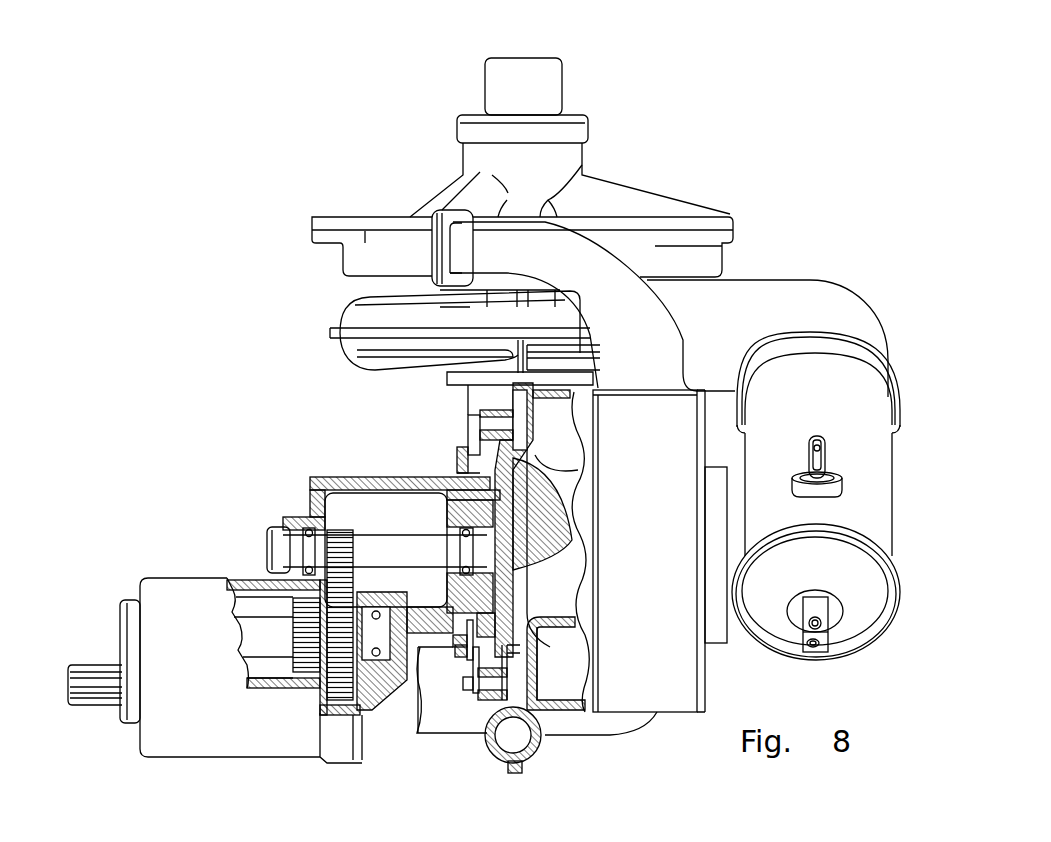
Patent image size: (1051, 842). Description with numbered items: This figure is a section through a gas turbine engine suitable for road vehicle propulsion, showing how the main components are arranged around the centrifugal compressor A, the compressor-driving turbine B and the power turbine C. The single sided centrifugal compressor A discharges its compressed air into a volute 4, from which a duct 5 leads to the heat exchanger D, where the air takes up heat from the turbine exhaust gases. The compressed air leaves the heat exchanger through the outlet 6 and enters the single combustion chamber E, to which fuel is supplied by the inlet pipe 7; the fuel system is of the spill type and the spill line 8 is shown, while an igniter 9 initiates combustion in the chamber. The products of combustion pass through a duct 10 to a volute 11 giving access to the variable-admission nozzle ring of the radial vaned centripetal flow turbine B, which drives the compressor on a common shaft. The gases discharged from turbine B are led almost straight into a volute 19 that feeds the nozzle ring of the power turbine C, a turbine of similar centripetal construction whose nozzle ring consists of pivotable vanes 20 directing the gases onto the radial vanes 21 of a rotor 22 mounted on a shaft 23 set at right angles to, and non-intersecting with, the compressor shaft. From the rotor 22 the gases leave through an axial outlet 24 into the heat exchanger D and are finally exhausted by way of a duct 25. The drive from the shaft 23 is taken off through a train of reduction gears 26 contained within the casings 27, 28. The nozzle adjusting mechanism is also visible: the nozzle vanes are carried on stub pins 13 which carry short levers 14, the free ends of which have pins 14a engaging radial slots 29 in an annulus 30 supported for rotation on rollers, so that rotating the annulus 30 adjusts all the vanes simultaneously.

The volute 4 is at (397, 232).
The centrifugal compressor A is at (650, 197).
The duct 5 is at (645, 338).
The duct 10 is at (808, 293).
The compressor-driving turbine B is at (348, 310).
The volute 11 is at (363, 352).
The combustion chamber E is at (882, 480).
The igniter 9 is at (820, 458).
The outlet 6 is at (780, 517).
The inlet pipe 7 is at (823, 628).
The spill line 8 is at (820, 647).
The heat exchanger D is at (632, 565).
The axial outlet 24 is at (571, 590).
The radial vanes 21 is at (540, 500).
The rotor 22 is at (517, 572).
The pivotable vanes 20 is at (543, 678).
The radial slots 29 is at (550, 663).
The stub pins 13 is at (487, 683).
The short levers 14 is at (477, 670).
The pins 14a is at (463, 660).
The annulus 30 is at (465, 657).
The casing 27 is at (373, 477).
The duct 25 is at (427, 730).
The shaft 23 is at (405, 542).
The reduction gears 26 is at (353, 572).
The casing 28 is at (187, 595).
The volute 19 is at (510, 737).
The power turbine C is at (540, 755).